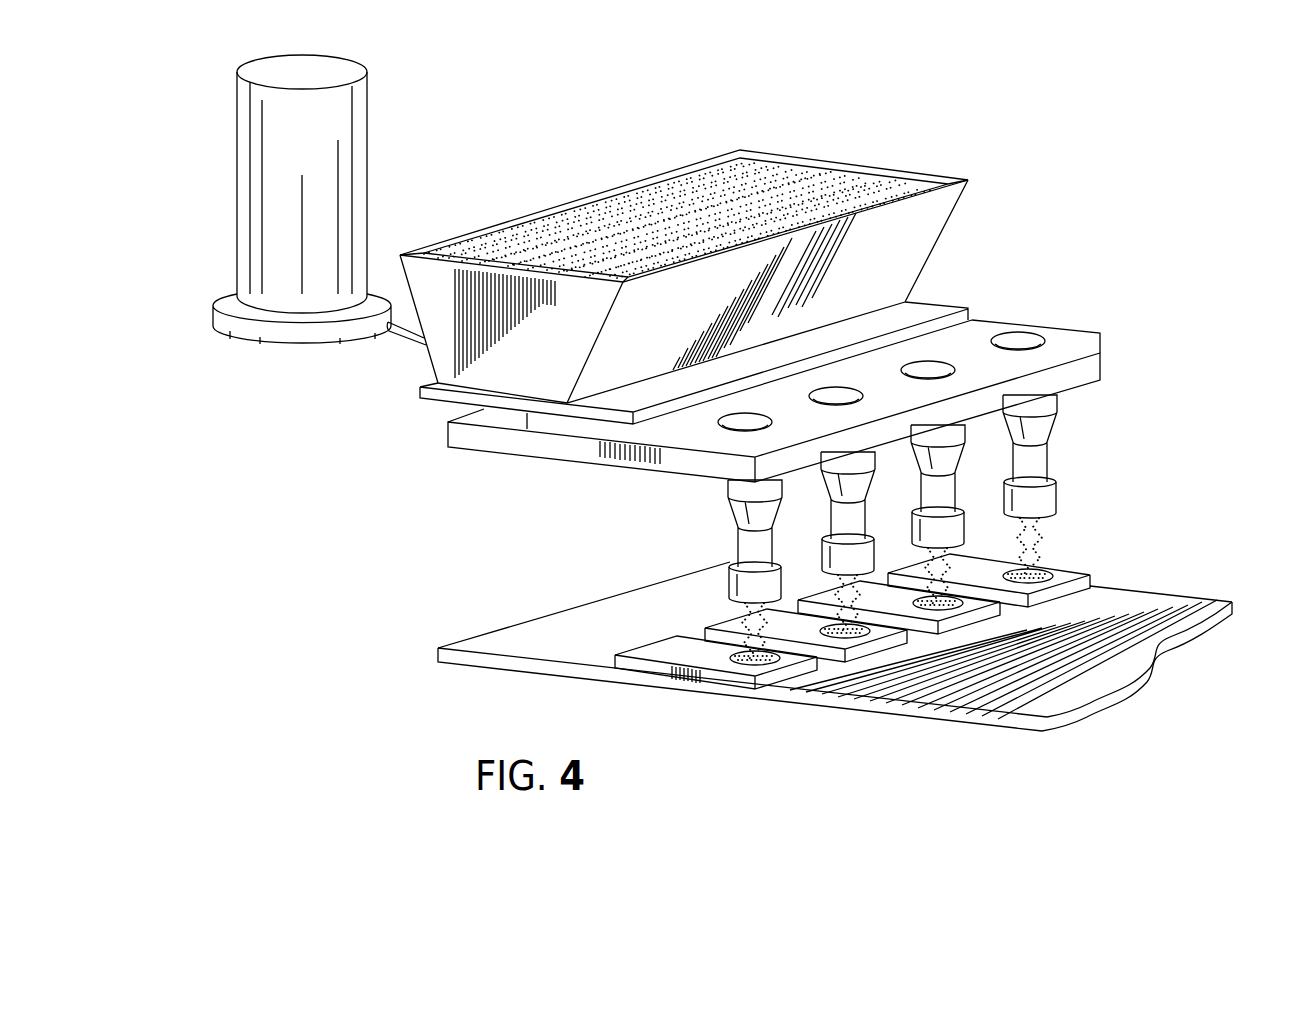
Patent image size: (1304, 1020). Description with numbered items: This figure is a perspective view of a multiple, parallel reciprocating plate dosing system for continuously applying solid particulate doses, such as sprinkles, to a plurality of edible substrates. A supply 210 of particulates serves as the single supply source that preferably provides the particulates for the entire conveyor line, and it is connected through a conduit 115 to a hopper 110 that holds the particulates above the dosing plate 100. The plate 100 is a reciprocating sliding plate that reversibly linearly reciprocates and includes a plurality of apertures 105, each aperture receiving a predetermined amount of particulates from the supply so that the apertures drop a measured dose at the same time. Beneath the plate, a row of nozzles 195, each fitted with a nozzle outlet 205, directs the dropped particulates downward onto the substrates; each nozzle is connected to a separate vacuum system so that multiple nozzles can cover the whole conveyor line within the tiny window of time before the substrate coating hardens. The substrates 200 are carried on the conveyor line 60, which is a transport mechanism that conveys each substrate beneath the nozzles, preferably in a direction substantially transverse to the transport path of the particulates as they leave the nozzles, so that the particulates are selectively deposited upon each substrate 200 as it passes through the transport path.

The conveyor line 60 is at (772, 720).
The dispensing plate 100 is at (668, 432).
The openings 105 is at (935, 366).
The hopper 110 is at (992, 210).
The feed conduit 115 is at (405, 352).
The nozzles 195 is at (1075, 462).
The pads 200 is at (665, 652).
The nozzle collars 205 is at (945, 528).
The powder reservoir 210 is at (212, 64).